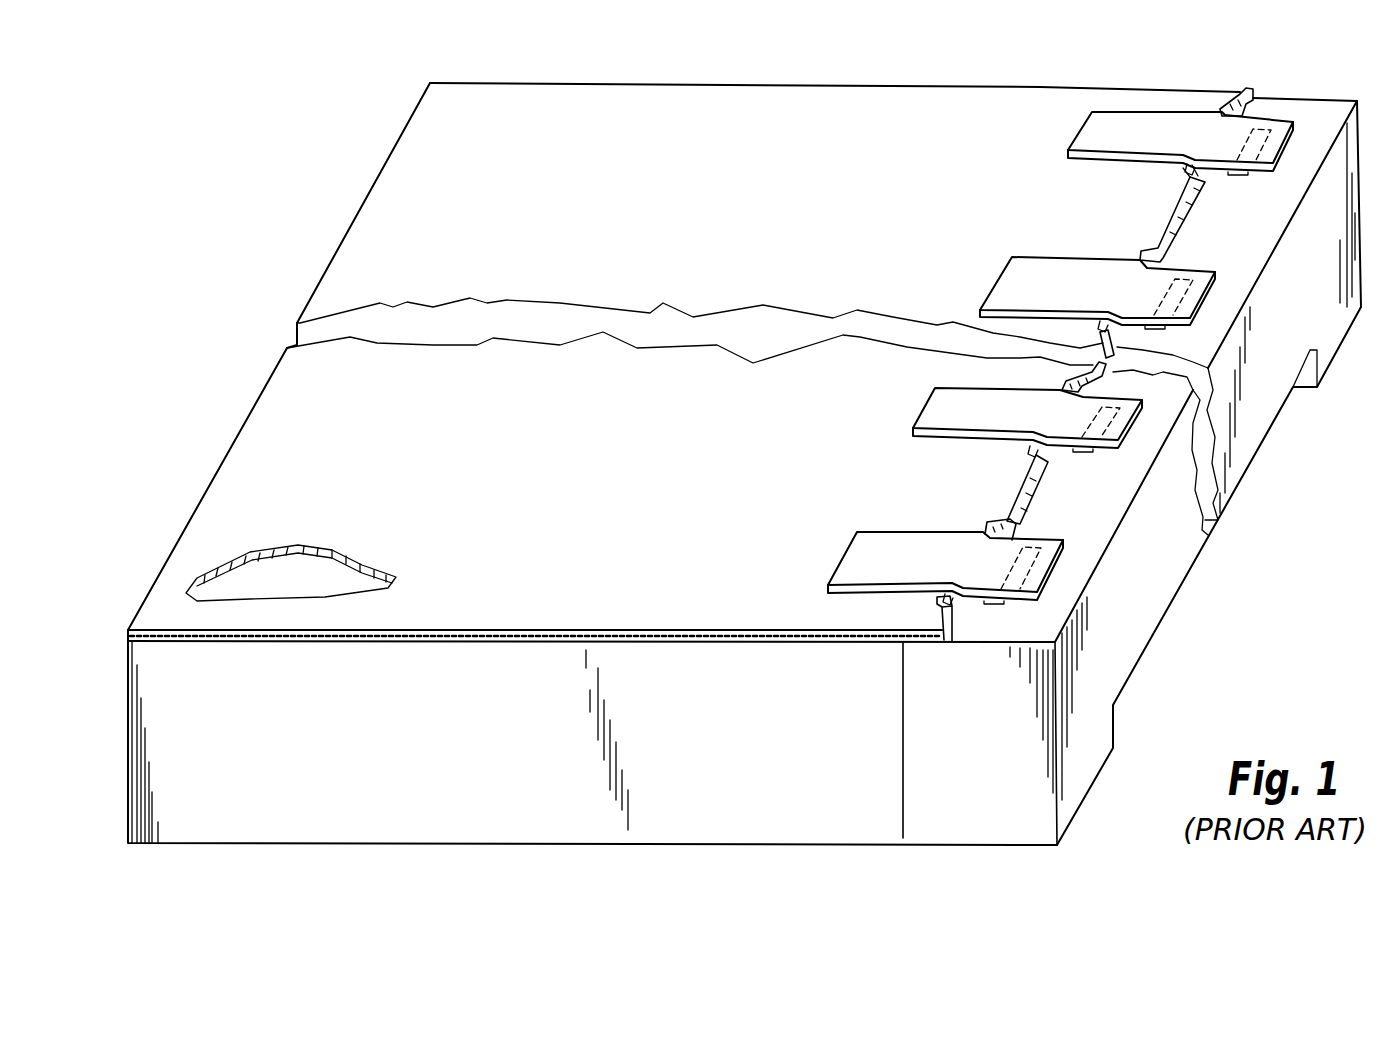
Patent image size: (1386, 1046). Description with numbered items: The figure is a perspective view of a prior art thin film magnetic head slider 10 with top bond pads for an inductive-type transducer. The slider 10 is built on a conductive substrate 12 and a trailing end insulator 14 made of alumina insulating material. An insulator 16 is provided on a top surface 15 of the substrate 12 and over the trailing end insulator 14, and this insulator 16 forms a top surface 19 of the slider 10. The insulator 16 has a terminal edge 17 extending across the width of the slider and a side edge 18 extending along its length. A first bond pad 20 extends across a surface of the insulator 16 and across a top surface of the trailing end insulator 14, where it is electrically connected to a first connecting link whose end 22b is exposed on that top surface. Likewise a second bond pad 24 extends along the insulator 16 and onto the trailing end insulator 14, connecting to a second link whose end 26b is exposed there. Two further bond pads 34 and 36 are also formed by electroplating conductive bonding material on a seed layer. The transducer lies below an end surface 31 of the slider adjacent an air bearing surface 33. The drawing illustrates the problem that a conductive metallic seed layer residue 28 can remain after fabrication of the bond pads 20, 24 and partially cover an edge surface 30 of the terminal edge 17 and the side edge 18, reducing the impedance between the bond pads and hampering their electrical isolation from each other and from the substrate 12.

The slider 10 is at (960, 72).
The conductive substrate 12 is at (745, 797).
The trailing end insulator 14 is at (988, 808).
The top surface 15 is at (317, 575).
The insulator 16 is at (540, 481).
The terminal edge 17 is at (1246, 89).
The side edge 18 is at (598, 630).
The top surface 19 is at (615, 108).
The first bond pad 20 is at (873, 545).
The end 22b is at (990, 603).
The second bond pad 24 is at (952, 398).
The end 26b is at (1080, 455).
The conductive metallic seed layer residue 28 is at (1007, 522).
The edge surface 30 is at (1033, 483).
The end surface 31 is at (1107, 655).
The air bearing surface 33 is at (1208, 535).
The bond pad 34 is at (1013, 277).
The bond pad 36 is at (1093, 128).